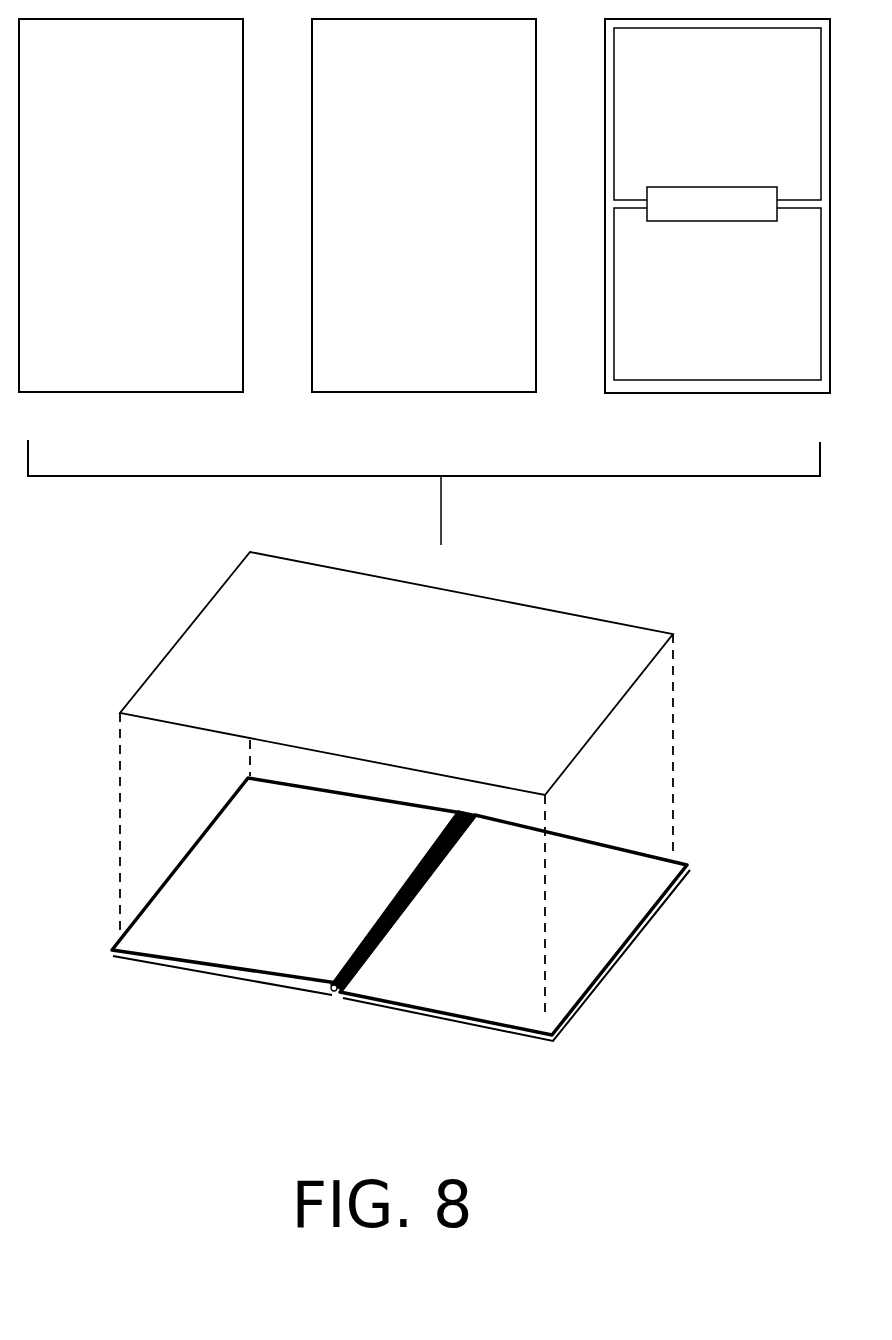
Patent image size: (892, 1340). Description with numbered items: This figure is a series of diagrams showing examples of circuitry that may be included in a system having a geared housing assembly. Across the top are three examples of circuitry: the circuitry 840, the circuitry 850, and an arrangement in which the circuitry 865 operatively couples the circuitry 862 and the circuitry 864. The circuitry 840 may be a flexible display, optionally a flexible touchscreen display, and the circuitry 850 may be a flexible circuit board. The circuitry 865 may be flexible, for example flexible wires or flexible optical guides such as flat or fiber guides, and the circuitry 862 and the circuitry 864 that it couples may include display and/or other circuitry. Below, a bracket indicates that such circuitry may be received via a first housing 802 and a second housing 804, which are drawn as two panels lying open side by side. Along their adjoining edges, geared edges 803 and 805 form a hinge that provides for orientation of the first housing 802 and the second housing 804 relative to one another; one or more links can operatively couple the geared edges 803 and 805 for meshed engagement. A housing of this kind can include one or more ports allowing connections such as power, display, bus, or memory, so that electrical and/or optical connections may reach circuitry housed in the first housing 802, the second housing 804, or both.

The circuitry 840 is at (111, 217).
The circuitry 850 is at (403, 217).
The circuitry 862 is at (696, 124).
The circuitry 864 is at (696, 306).
The circuitry 865 is at (696, 215).
The first housing 802 is at (577, 902).
The geared edge 803 is at (386, 935).
The second housing 804 is at (203, 927).
The geared edge 805 is at (367, 925).